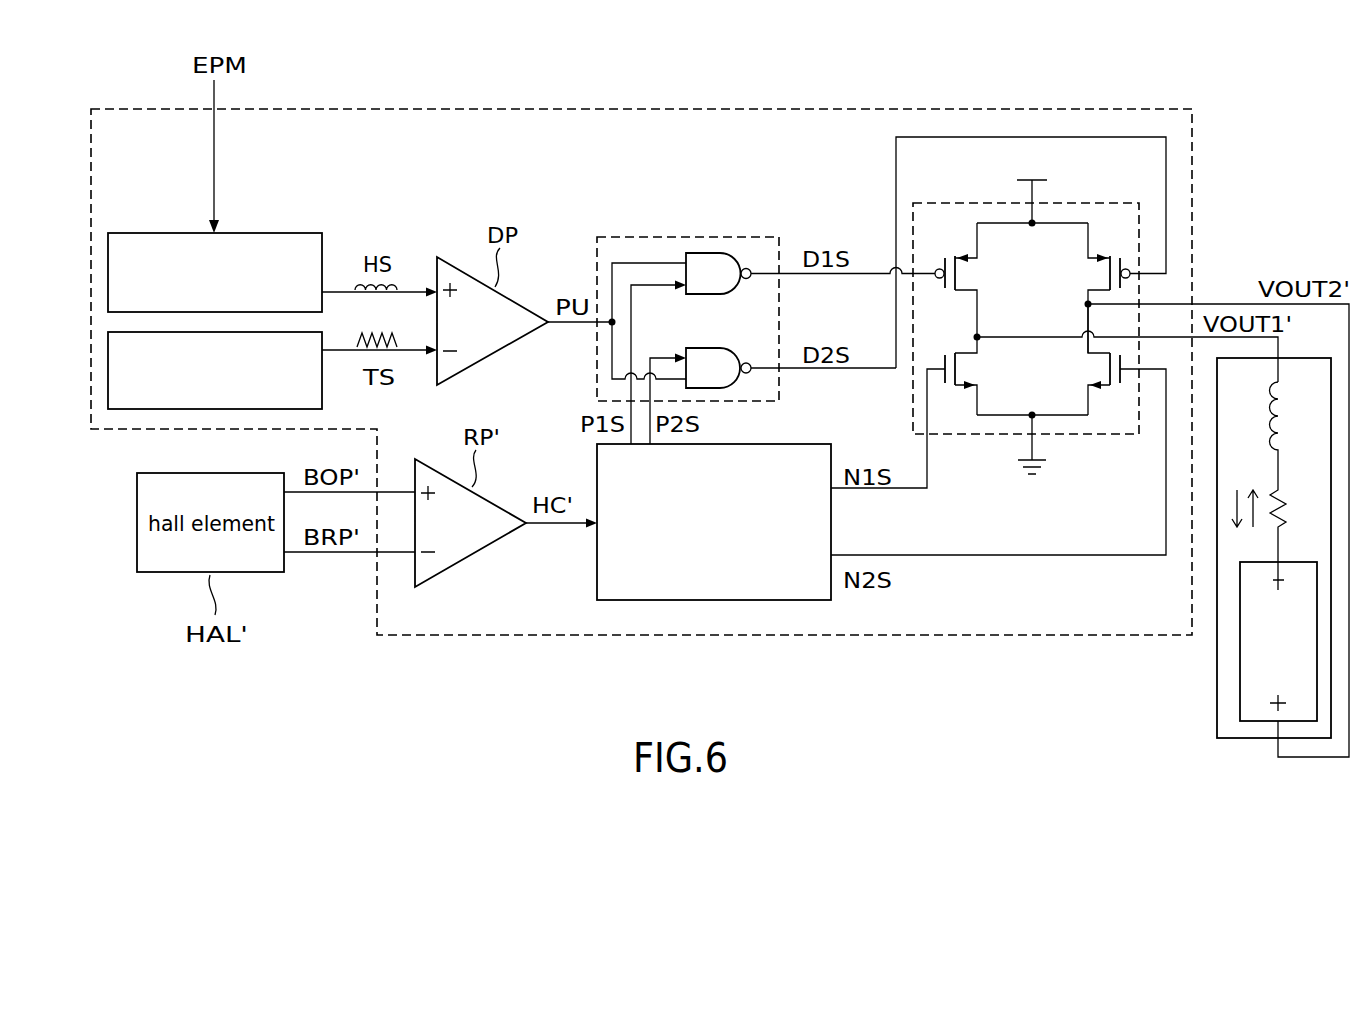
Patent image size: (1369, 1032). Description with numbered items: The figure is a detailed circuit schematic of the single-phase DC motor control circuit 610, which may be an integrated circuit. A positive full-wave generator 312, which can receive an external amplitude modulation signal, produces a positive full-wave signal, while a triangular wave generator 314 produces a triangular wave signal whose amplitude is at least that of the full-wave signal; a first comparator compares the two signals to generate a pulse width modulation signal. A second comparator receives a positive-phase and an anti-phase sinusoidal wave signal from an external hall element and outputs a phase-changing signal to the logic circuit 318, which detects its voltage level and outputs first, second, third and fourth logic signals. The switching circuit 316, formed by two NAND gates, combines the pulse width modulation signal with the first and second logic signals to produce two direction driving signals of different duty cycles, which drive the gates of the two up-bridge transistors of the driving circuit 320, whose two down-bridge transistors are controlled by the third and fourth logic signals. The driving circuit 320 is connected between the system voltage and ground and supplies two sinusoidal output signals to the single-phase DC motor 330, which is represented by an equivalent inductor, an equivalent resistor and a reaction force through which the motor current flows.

The single-phase DC motor control circuit 610 is at (650, 109).
The positive full-wave generator 312 is at (273, 231).
The triangular wave generator 314 is at (142, 410).
The switching circuit 316 is at (715, 237).
The logic circuit 318 is at (597, 568).
The driving circuit 320 is at (1100, 434).
The single-phase DC motor 330 is at (1240, 738).